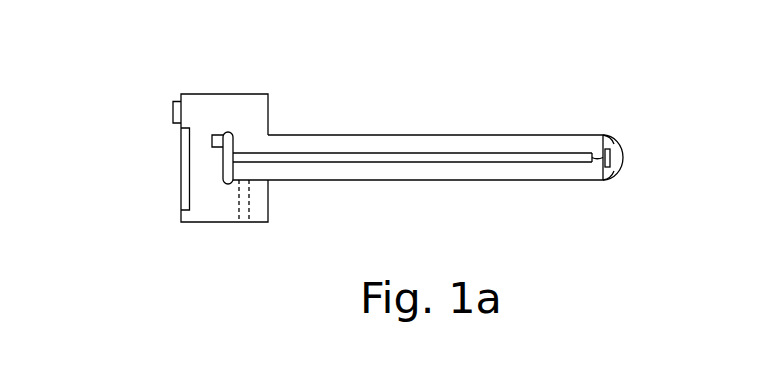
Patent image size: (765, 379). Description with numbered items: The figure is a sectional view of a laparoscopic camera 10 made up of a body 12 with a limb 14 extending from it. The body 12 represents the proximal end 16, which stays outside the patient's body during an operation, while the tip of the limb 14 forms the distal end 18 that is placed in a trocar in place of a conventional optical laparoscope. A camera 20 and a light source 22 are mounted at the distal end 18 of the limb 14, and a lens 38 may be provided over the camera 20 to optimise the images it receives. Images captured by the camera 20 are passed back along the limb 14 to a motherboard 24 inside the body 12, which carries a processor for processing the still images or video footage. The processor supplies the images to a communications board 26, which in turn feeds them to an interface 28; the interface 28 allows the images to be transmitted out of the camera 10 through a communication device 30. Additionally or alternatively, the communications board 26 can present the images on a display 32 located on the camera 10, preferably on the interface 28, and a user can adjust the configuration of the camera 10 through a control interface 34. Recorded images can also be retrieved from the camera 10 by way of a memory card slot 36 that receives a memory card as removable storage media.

The laparoscopic camera 10 is at (433, 83).
The body 12 is at (213, 93).
The limb 14 is at (430, 182).
The proximal end 16 is at (165, 253).
The distal end 18 is at (590, 100).
The camera 20 is at (610, 158).
The light source 22 is at (607, 142).
The motherboard 24 is at (367, 163).
The communications board 26 is at (229, 152).
The interface 28 is at (118, 162).
The communication device 30 is at (213, 137).
The display 32 is at (185, 182).
The control interface 34 is at (175, 120).
The memory card slot 36 is at (242, 222).
The lens 38 is at (623, 148).